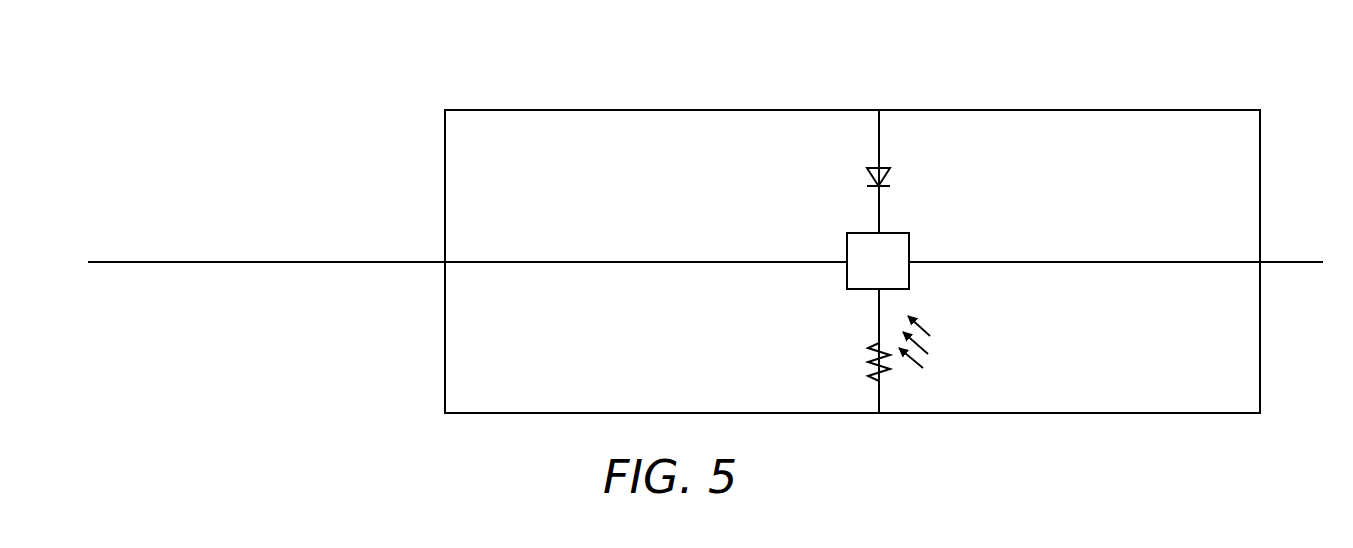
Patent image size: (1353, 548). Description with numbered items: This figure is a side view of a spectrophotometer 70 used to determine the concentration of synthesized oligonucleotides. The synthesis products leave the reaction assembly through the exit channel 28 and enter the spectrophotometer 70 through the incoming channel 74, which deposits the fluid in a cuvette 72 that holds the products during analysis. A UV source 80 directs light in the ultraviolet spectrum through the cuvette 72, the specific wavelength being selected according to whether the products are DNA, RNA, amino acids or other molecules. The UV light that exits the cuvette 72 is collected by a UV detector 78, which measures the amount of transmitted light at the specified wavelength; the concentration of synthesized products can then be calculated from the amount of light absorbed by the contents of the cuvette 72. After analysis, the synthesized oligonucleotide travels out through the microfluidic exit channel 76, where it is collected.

The spectrophotometer 70 is at (378, 93).
The exit channel 28 is at (265, 262).
The incoming channel 74 is at (597, 262).
The microfluidic exit channel 76 is at (1082, 262).
The UV detector 78 is at (879, 134).
The cuvette 72 is at (890, 282).
The UV source 80 is at (936, 352).